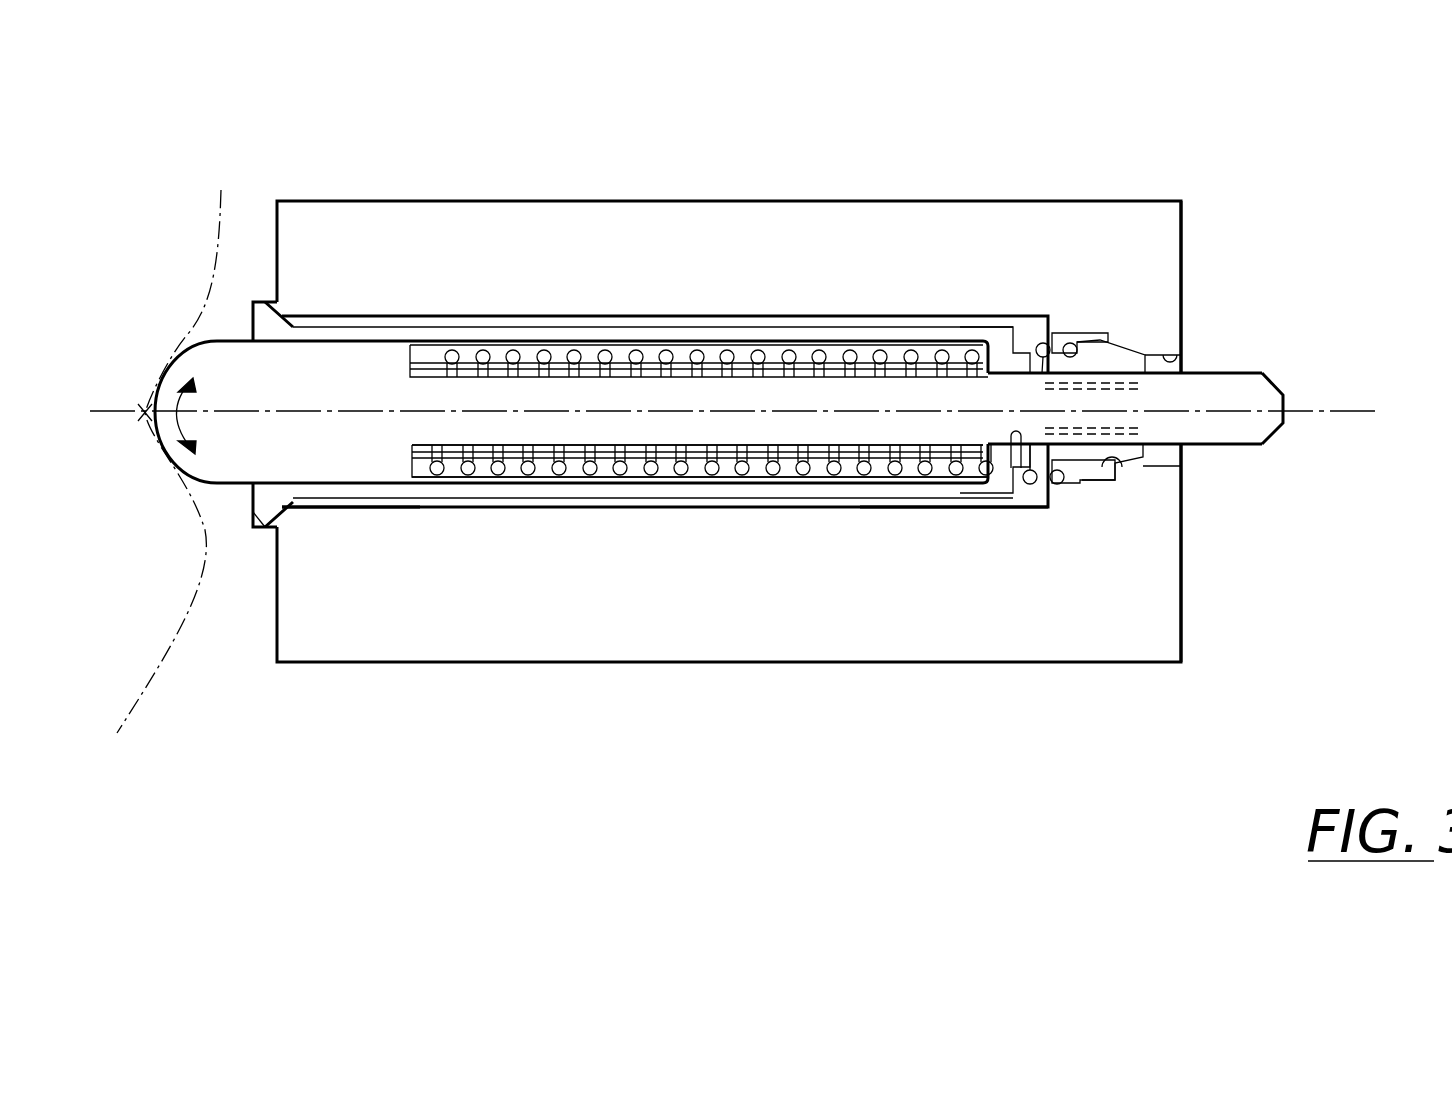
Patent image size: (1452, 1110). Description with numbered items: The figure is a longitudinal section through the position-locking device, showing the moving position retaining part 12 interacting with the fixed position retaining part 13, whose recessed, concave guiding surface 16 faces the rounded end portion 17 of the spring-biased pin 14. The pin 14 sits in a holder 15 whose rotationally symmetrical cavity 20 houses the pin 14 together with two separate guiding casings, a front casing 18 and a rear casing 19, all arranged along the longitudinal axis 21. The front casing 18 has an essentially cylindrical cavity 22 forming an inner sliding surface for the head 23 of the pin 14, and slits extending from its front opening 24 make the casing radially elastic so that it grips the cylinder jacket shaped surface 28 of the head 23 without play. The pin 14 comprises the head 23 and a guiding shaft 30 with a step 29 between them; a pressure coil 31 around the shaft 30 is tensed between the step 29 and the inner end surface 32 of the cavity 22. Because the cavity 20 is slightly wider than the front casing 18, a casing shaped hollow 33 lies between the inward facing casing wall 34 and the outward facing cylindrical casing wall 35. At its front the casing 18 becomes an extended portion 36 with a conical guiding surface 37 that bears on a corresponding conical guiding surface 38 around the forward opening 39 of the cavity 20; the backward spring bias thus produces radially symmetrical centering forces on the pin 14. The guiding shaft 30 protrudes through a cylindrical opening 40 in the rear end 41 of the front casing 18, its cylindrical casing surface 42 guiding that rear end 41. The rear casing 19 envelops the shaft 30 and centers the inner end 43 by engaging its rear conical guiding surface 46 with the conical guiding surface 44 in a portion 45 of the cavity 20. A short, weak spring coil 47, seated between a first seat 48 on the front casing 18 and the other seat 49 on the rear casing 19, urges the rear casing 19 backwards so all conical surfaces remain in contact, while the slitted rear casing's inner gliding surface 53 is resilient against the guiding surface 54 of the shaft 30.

The moving position retaining part 12 is at (686, 664).
The fixed position retaining part 13 is at (193, 320).
The pin 14 is at (231, 487).
The holder 15 is at (673, 255).
The guiding surface 16 is at (154, 479).
The rounded end portion 17 is at (157, 395).
The front casing 18 is at (470, 337).
The rear casing 19 is at (1150, 356).
The cavity 20 is at (790, 322).
The longitudinal axis 21 is at (436, 466).
The cavity 22 is at (598, 482).
The head 23 is at (322, 443).
The front opening 24 is at (280, 513).
The cylinder jacket shaped surface 28 is at (348, 484).
The step 29 is at (457, 477).
The guiding shaft 30 is at (628, 398).
The pressure coil 31 is at (736, 471).
The inner end surface 32 is at (1015, 343).
The casing shaped hollow 33 is at (967, 478).
The casing wall 34 is at (927, 500).
The cylindrical casing wall 35 is at (882, 507).
The extended portion 36 is at (260, 316).
The conical guiding surface 37 is at (303, 320).
The conical guiding surface 38 is at (255, 512).
The forward opening 39 is at (278, 308).
The opening 40 is at (1057, 487).
The rear end 41 is at (1017, 497).
The cylindrical casing surface 42 is at (995, 478).
The inner end 43 is at (1270, 440).
The conical guiding surface 44 is at (1128, 445).
The portion 45 is at (1180, 372).
The rear conical guiding surface 46 is at (1143, 355).
The spring coil 47 is at (1103, 480).
The first seat 48 is at (1046, 342).
The other seat 49 is at (1070, 343).
The inner gliding surface 53 is at (1097, 377).
The guiding surface 54 is at (1240, 437).